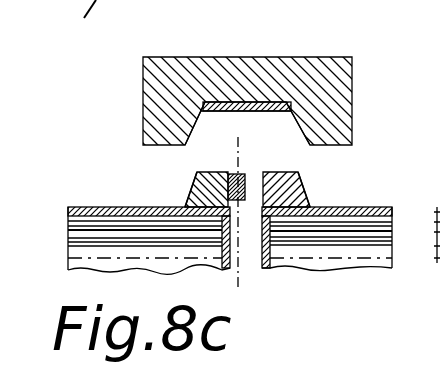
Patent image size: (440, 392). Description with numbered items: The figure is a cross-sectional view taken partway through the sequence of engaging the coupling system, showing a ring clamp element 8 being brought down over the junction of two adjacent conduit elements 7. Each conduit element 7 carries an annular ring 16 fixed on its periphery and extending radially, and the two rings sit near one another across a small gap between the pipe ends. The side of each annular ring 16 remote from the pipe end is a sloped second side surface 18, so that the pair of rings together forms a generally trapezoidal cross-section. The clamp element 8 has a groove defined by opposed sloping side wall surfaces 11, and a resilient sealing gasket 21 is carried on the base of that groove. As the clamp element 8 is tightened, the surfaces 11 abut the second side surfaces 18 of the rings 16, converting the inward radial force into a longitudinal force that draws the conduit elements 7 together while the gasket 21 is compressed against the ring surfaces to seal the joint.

The conduit element 7 is at (100, 243).
The ring clamp element 8 is at (330, 60).
The sloping side wall surface 11 is at (192, 132).
The annular ring 16 is at (213, 170).
The second side surface 18 is at (188, 180).
The resilient sealing gasket 21 is at (250, 107).